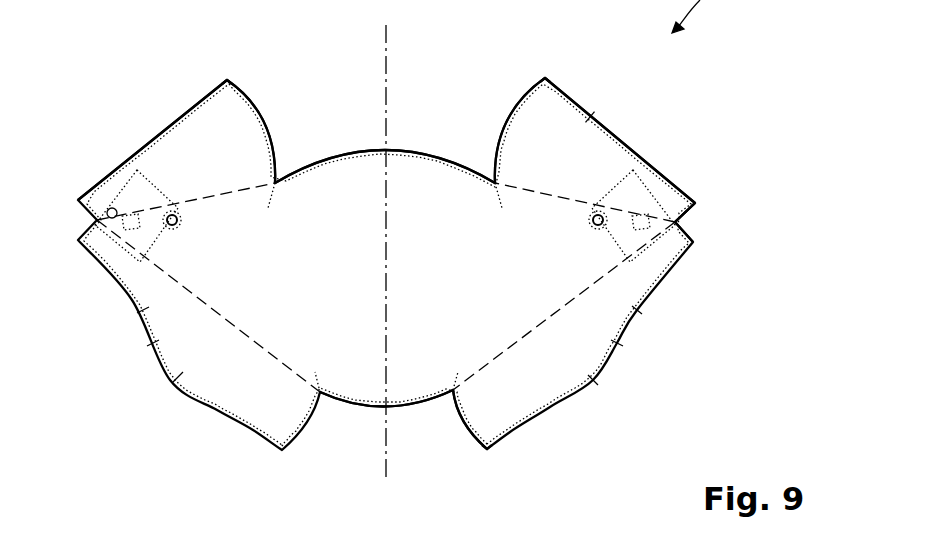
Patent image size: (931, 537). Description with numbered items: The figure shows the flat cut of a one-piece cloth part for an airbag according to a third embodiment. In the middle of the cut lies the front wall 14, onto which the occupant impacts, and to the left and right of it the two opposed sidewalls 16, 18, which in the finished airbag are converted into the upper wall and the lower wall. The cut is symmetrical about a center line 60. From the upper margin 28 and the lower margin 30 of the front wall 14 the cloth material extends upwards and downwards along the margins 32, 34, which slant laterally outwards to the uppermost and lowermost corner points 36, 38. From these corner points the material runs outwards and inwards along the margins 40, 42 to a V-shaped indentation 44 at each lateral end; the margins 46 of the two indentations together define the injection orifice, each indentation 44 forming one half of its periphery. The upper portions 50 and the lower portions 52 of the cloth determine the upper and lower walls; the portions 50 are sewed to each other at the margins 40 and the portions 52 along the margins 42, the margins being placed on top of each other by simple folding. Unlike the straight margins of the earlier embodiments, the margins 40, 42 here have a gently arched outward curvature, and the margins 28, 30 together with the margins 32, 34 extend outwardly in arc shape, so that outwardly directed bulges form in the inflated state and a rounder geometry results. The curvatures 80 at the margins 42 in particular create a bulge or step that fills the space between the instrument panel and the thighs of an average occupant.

The front wall 14 is at (342, 270).
The sidewall 16 is at (214, 273).
The sidewall 18 is at (530, 270).
The upper margin 28 is at (407, 150).
The lower margin 30 is at (395, 408).
The margin 32 is at (510, 125).
The margin 34 is at (467, 433).
The uppermost corner point 36 is at (545, 78).
The lowermost corner point 38 is at (487, 450).
The margin 40 is at (632, 150).
The margin 42 is at (617, 343).
The V-shaped indentation 44 is at (706, 228).
The margin of the V-shaped indentation 46 is at (690, 215).
The upper portion 50 is at (590, 117).
The lower portion 52 is at (637, 310).
The center line 60 is at (387, 40).
The curvature 80 is at (593, 380).